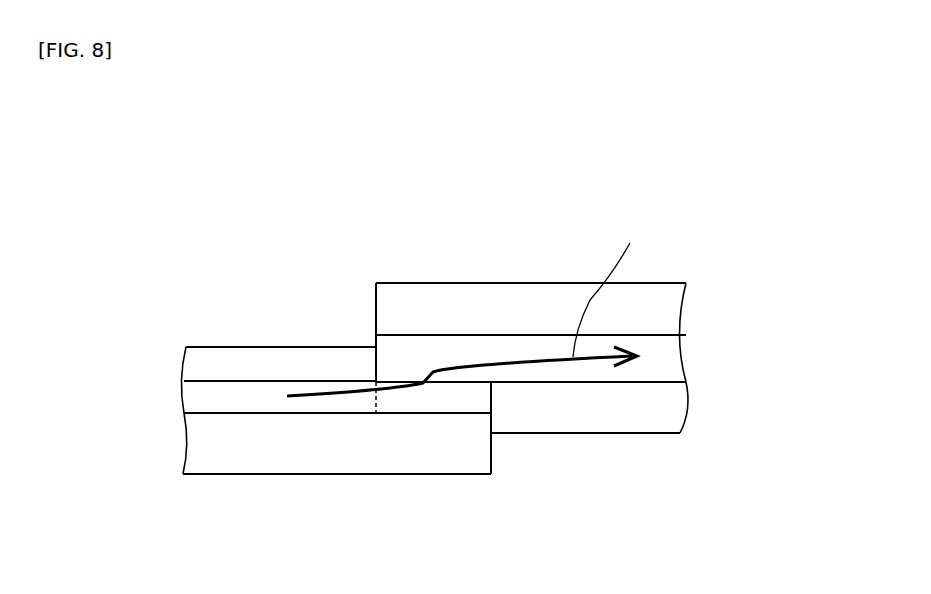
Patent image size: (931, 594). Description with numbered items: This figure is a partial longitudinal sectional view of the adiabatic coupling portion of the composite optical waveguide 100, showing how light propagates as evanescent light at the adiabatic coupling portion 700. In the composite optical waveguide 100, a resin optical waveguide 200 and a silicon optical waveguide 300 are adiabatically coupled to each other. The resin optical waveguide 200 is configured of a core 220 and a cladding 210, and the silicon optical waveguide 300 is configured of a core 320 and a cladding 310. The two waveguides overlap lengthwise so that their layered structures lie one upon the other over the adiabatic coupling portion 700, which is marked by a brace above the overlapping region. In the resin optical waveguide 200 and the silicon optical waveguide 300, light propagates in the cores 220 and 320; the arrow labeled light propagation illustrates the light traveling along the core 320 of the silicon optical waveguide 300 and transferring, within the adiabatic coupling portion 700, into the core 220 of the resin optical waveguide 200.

The composite optical waveguide 100 is at (503, 173).
The resin optical waveguide 200 is at (539, 258).
The cladding 210 is at (430, 290).
The core 220 is at (412, 357).
The silicon optical waveguide 300 is at (228, 490).
The cladding 310 is at (227, 355).
The core 320 is at (193, 398).
The adiabatic coupling portion 700 is at (495, 204).